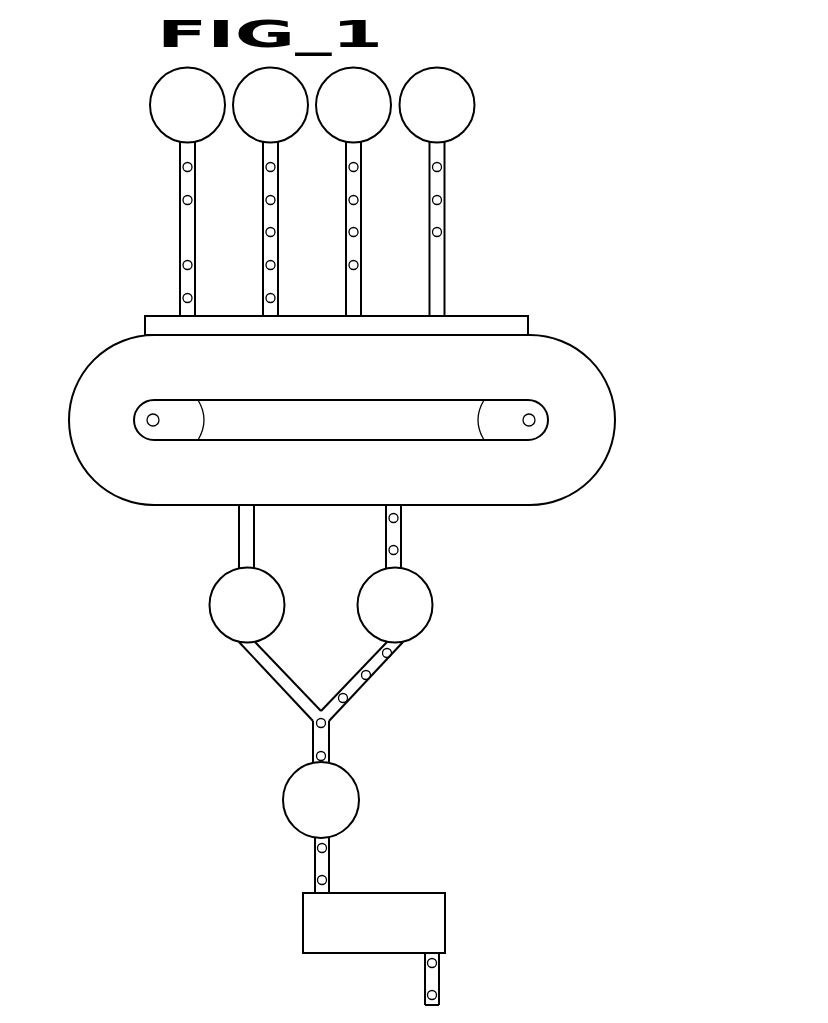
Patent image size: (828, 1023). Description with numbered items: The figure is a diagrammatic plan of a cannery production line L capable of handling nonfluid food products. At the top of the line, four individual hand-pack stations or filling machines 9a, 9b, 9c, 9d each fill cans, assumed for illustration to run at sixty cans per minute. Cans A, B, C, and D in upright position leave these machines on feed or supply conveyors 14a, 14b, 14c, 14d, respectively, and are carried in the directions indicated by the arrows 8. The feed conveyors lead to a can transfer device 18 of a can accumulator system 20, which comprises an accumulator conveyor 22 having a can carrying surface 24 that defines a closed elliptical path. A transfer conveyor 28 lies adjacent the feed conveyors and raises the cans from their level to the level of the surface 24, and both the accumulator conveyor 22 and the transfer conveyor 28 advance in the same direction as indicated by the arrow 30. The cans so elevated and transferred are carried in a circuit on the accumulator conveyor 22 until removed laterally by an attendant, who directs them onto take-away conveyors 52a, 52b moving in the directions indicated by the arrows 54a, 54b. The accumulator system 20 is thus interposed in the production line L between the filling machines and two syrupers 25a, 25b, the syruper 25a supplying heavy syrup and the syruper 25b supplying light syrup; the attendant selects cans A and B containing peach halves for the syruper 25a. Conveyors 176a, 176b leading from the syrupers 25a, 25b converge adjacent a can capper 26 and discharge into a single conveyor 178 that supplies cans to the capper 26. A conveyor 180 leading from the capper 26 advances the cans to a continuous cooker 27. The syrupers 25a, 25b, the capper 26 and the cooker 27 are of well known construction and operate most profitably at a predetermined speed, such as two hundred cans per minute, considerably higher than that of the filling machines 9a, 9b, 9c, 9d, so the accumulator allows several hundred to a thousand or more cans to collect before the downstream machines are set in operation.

The filling machine 9a is at (450, 104).
The filling machine 9b is at (367, 104).
The filling machine 9c is at (284, 104).
The filling machine 9d is at (201, 104).
The feed conveyor 14a is at (446, 280).
The feed conveyor 14b is at (345, 285).
The feed conveyor 14c is at (262, 285).
The feed conveyor 14d is at (177, 265).
The arrows 8 is at (247, 240).
The can transfer device 18 is at (484, 319).
The can accumulator system 20 is at (318, 406).
The accumulator conveyor 22 is at (122, 481).
The can carrying surface 24 is at (466, 380).
The transfer conveyor 28 is at (167, 319).
The arrow 30 is at (340, 370).
The syruper 25a is at (406, 610).
The syruper 25b is at (258, 610).
The take-away conveyor 52a is at (404, 549).
The take-away conveyor 52b is at (256, 546).
The arrow 54a is at (372, 558).
The arrow 54b is at (220, 522).
The cannery production line L is at (180, 532).
The conveyor 176a is at (357, 690).
The conveyor 176b is at (288, 690).
The single conveyor 178 is at (326, 742).
The can capper 26 is at (338, 805).
The conveyor 180 is at (320, 862).
The continuous cooker 27 is at (388, 932).
The cans A is at (441, 168).
The cans B is at (358, 166).
The cans C is at (274, 168).
The cans D is at (190, 198).